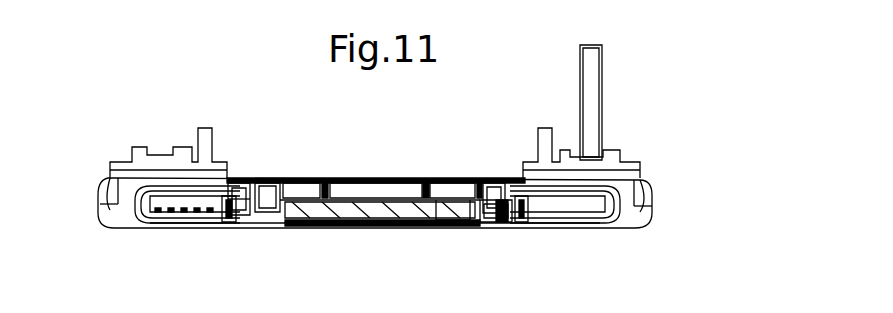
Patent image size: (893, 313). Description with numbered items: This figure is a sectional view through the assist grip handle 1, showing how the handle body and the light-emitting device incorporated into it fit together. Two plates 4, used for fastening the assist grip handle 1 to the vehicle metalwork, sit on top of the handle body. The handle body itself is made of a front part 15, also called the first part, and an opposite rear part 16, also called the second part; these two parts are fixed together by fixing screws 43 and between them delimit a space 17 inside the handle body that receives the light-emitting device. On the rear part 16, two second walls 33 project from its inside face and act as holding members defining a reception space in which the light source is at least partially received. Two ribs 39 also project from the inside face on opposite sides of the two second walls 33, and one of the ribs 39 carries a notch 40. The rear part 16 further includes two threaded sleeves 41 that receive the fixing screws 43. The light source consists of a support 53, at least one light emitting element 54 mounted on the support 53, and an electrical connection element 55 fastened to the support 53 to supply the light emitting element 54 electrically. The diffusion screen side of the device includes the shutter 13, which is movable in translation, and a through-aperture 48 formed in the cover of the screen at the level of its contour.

The assist grip handle 1 is at (732, 100).
The plate 4 is at (110, 163).
The shutter 13 is at (326, 232).
The front part 15 is at (128, 232).
The rear part 16 is at (410, 182).
The space 17 is at (262, 180).
The second wall 33 is at (326, 186).
The rib 39 is at (292, 182).
The notch 40 is at (490, 225).
The sleeve 41 is at (234, 180).
The fixing screw 43 is at (226, 228).
The through-aperture 48 is at (446, 230).
The support 53 is at (373, 206).
The light emitting element 54 is at (380, 232).
The electrical connection element 55 is at (596, 58).